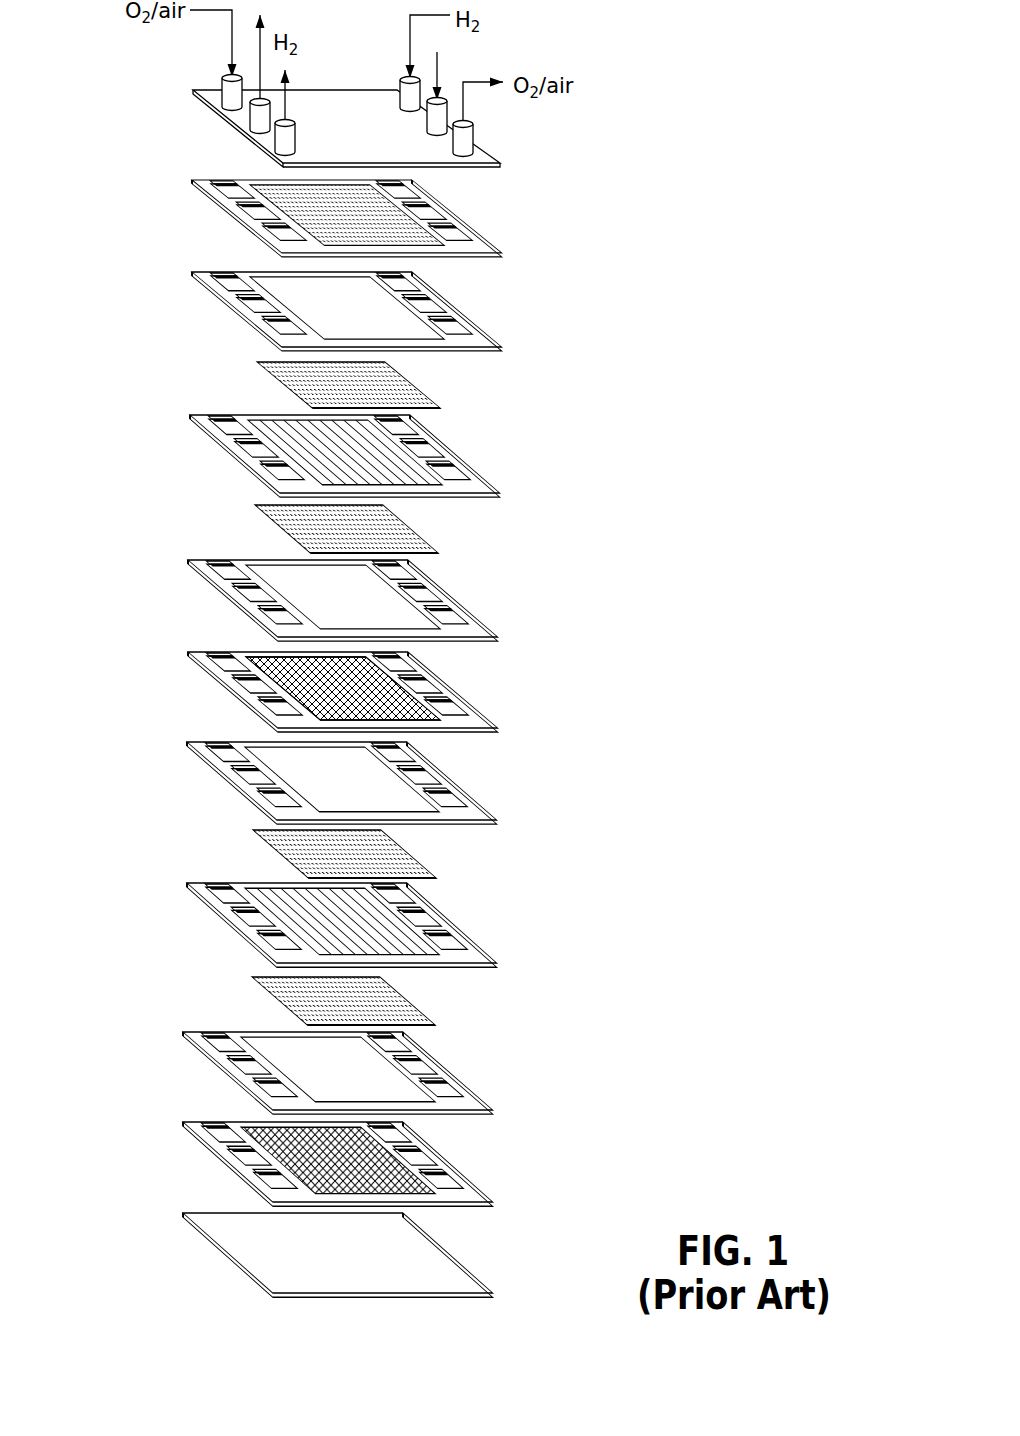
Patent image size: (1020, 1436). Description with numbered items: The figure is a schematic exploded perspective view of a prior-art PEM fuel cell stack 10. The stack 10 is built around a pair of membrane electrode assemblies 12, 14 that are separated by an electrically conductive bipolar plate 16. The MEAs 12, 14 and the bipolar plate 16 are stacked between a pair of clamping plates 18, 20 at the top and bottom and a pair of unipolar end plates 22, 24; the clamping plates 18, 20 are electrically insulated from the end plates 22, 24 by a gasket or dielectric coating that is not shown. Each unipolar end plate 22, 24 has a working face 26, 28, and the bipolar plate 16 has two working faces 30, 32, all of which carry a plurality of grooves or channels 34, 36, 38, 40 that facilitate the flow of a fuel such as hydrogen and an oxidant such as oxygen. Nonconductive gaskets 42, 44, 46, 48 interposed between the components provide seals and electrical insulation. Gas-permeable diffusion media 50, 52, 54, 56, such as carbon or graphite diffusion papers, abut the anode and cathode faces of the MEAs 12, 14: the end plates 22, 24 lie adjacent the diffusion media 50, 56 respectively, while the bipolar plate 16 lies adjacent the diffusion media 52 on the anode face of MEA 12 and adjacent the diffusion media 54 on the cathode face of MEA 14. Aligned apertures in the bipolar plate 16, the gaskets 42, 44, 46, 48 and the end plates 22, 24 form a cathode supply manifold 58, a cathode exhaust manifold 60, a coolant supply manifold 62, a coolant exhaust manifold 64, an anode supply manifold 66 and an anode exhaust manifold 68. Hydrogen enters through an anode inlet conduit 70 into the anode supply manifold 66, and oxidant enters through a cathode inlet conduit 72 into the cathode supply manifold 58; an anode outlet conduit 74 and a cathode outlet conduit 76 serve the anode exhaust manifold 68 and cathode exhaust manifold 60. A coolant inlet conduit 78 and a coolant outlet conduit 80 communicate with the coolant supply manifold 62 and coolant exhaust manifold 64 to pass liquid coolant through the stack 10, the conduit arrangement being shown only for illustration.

The PEM fuel cell stack 10 is at (620, 418).
The membrane electrode assembly 12 is at (215, 450).
The membrane electrode assembly 14 is at (460, 910).
The bipolar plate 16 is at (344, 687).
The clamping plate 18 is at (218, 126).
The clamping plate 20 is at (475, 1247).
The unipolar end plate 22 is at (345, 226).
The unipolar end plate 24 is at (341, 1149).
The working face 26 is at (430, 250).
The working face 28 is at (250, 1124).
The working face 30 is at (394, 773).
The working face 32 is at (317, 720).
The channels 34 is at (237, 225).
The channels 36 is at (403, 672).
The channels 38 is at (283, 714).
The channels 40 is at (470, 1169).
The nonconductive gasket 42 is at (220, 282).
The nonconductive gasket 44 is at (233, 598).
The nonconductive gasket 46 is at (457, 783).
The nonconductive gasket 48 is at (430, 1062).
The gas-permeable diffusion media 50 is at (295, 382).
The gas-permeable diffusion media 52 is at (285, 530).
The gas-permeable diffusion media 54 is at (420, 853).
The gas-permeable diffusion media 56 is at (410, 997).
The cathode supply manifold 58 is at (218, 657).
The cathode exhaust manifold 60 is at (430, 705).
The coolant supply manifold 62 is at (423, 690).
The coolant exhaust manifold 64 is at (245, 678).
The anode supply manifold 66 is at (400, 663).
The anode exhaust manifold 68 is at (278, 705).
The anode inlet conduit 70 is at (402, 97).
The cathode inlet conduit 72 is at (232, 92).
The anode outlet conduit 74 is at (282, 133).
The cathode outlet conduit 76 is at (468, 143).
The coolant inlet conduit 78 is at (445, 112).
The coolant outlet conduit 80 is at (255, 118).